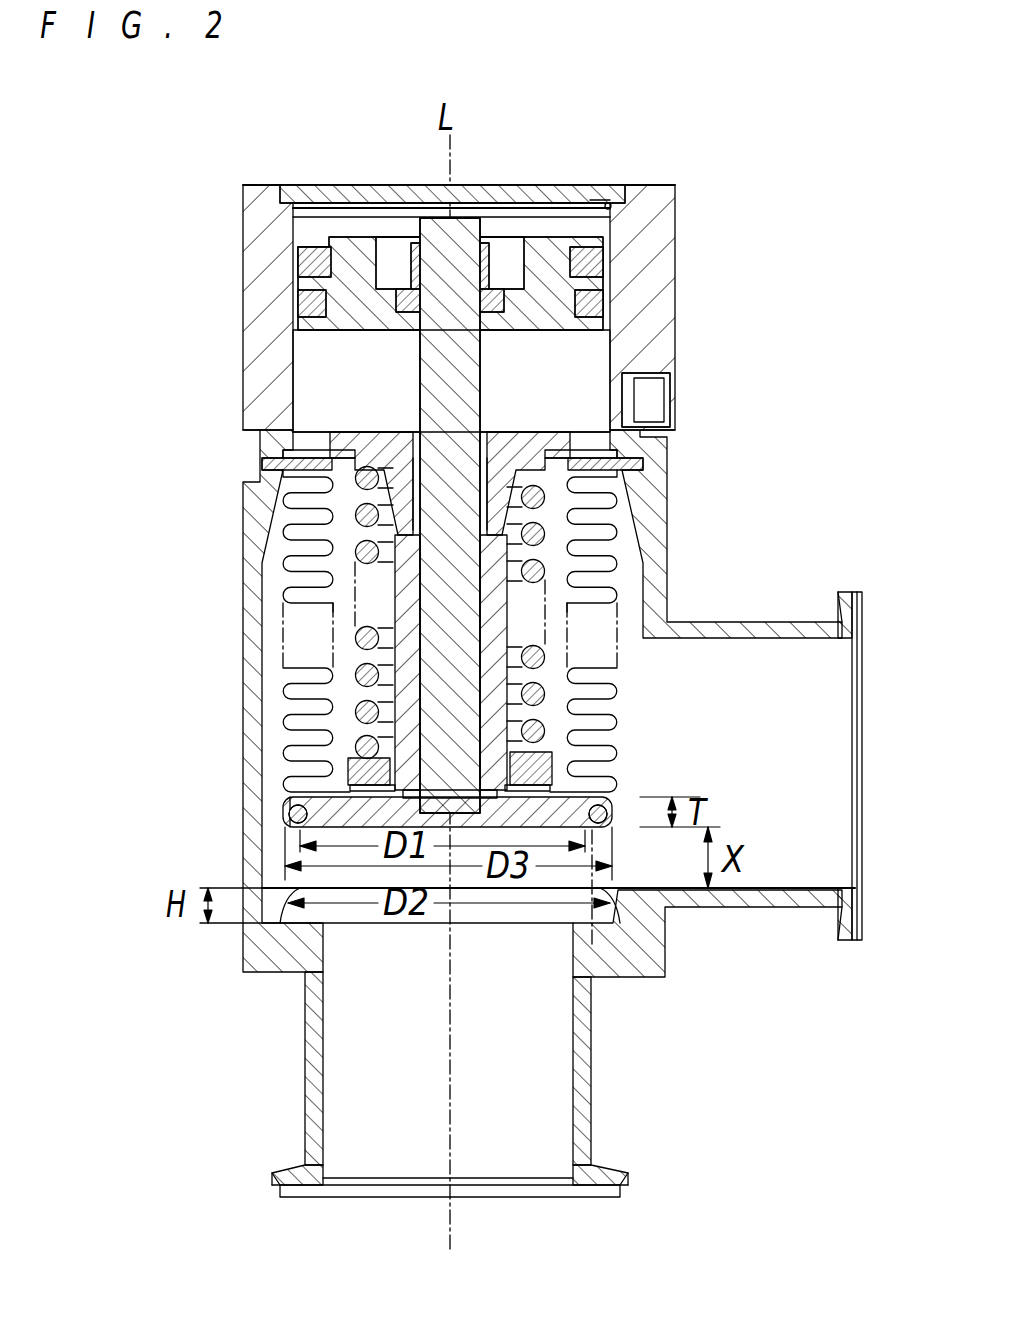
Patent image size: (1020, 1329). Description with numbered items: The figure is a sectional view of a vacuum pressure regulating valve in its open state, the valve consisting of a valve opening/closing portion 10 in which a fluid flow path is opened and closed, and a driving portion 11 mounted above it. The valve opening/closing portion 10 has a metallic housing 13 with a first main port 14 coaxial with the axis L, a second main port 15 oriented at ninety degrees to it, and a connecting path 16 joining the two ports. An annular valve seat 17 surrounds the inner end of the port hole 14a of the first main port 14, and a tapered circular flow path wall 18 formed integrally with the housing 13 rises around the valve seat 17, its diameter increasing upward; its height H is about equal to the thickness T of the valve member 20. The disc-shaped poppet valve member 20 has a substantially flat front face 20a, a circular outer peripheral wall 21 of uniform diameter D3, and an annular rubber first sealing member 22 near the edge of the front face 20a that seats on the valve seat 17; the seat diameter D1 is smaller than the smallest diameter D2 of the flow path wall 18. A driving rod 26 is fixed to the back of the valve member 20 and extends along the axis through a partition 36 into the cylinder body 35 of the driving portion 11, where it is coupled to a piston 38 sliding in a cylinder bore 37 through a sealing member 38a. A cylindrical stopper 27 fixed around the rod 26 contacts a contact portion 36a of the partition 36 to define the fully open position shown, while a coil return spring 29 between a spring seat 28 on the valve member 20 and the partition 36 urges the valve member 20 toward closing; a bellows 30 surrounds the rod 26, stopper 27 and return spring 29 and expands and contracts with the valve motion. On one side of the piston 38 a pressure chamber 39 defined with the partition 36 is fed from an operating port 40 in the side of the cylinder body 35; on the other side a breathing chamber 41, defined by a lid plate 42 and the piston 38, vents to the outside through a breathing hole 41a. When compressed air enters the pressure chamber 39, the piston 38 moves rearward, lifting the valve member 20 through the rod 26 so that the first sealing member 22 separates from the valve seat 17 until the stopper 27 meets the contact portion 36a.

The valve opening/closing portion 10 is at (728, 552).
The driving portion 11 is at (564, 140).
The housing 13 is at (255, 628).
The first main port 14 is at (388, 1158).
The port hole 14a is at (375, 1078).
The second main port 15 is at (825, 727).
The connecting path 16 is at (355, 740).
The valve seat 17 is at (602, 925).
The flow path wall 18 is at (283, 925).
The valve member 20 is at (300, 800).
The front face 20a is at (290, 832).
The outer peripheral wall 21 is at (292, 815).
The first sealing member 22 is at (607, 828).
The driving rod 26 is at (440, 605).
The stopper 27 is at (405, 585).
The spring seat 28 is at (530, 785).
The return spring 29 is at (540, 658).
The bellows 30 is at (300, 690).
The cylinder body 35 is at (667, 255).
The partition 36 is at (350, 440).
The contact portion 36a is at (290, 490).
The cylinder bore 37 is at (587, 213).
The piston 38 is at (355, 262).
The sealing member 38a is at (300, 300).
The pressure chamber 39 is at (555, 370).
The operating port 40 is at (655, 395).
The breathing chamber 41 is at (403, 225).
The breathing hole 41a is at (466, 195).
The lid plate 42 is at (370, 200).